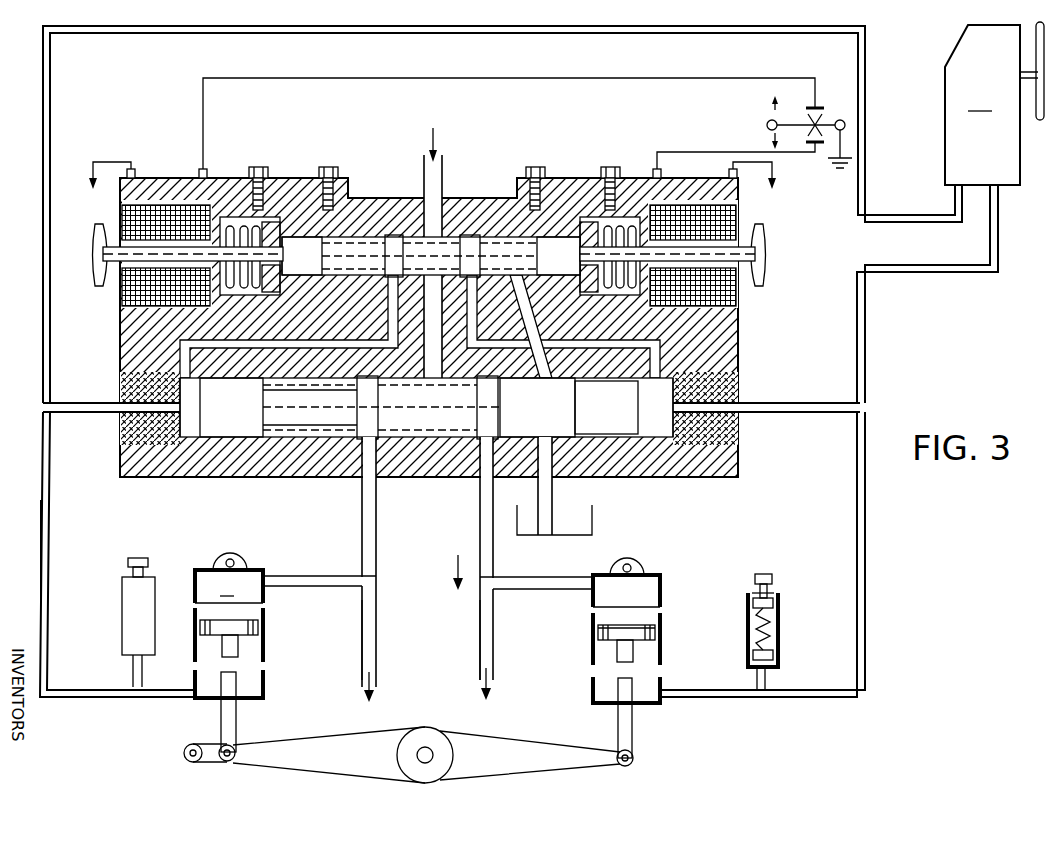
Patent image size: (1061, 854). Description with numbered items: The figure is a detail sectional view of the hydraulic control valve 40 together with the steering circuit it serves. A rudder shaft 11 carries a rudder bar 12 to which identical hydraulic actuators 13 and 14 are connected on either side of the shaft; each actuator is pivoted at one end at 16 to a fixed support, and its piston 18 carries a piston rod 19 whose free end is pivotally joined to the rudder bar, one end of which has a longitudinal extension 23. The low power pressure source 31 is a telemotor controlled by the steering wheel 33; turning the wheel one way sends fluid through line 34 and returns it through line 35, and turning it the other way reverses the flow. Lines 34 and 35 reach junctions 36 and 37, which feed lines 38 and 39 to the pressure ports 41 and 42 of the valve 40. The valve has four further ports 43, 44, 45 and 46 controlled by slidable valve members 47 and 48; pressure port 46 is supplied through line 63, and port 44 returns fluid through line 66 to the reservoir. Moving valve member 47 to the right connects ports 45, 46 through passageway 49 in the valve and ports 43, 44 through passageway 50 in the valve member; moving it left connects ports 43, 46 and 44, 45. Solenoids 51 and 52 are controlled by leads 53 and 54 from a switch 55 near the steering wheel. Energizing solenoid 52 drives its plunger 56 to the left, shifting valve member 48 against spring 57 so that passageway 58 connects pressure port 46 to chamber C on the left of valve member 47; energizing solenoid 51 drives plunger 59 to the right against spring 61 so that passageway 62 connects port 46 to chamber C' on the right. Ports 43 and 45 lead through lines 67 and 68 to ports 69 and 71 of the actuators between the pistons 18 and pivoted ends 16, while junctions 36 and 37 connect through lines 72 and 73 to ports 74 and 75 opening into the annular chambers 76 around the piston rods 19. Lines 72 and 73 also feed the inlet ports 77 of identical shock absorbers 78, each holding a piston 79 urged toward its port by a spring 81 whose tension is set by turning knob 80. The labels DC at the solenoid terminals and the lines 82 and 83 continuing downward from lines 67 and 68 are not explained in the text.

The rudder shaft 11 is at (433, 766).
The rudder bar 12 is at (316, 764).
The hydraulic actuator 13 is at (195, 582).
The hydraulic actuator 14 is at (664, 590).
The pivot 16 is at (230, 562).
The piston 18 is at (598, 635).
The piston rod 19 is at (632, 733).
The longitudinal extension 23 is at (198, 762).
The low power pressure source 31 is at (991, 105).
The steering wheel 33 is at (1040, 120).
The line 34 is at (918, 272).
The line 35 is at (416, 30).
The junction 36 is at (865, 404).
The junction 37 is at (40, 408).
The line 38 is at (808, 402).
The line 39 is at (60, 403).
The hydraulic control valve 40 is at (712, 488).
The pressure port 41 is at (742, 400).
The pressure port 42 is at (120, 400).
The port 43 is at (360, 480).
The port 44 is at (555, 480).
The port 45 is at (478, 480).
The pressure port 46 is at (444, 196).
The slidable valve member 47 is at (415, 450).
The slidable valve member 48 is at (510, 250).
The passageway 49 is at (432, 330).
The passageway 50 is at (300, 408).
The solenoid 51 is at (170, 222).
The solenoid 52 is at (693, 222).
The lead 53 is at (207, 133).
The lead 54 is at (725, 151).
The switch 55 is at (802, 100).
The plunger 56 is at (740, 272).
The spring 57 is at (244, 281).
The passageway 58 is at (350, 340).
The plunger 59 is at (130, 262).
The spring 61 is at (610, 288).
The passageway 62 is at (556, 348).
The line 63 is at (423, 165).
The line 66 is at (536, 492).
The line 67 is at (362, 532).
The line 68 is at (478, 538).
The port 69 is at (262, 576).
The port 71 is at (593, 580).
The line 72 is at (858, 570).
The line 73 is at (43, 531).
The port 74 is at (664, 697).
The port 75 is at (194, 698).
The annular chamber 76 is at (255, 650).
The inlet port 77 is at (130, 656).
The shock absorber 78 is at (778, 630).
The piston 79 is at (776, 660).
The knob 80 is at (768, 578).
The spring 81 is at (776, 612).
The line 82 is at (360, 624).
The line 83 is at (478, 627).
The chamber C is at (187, 438).
The chamber C' is at (660, 438).
The DC supply DC is at (433, 186).